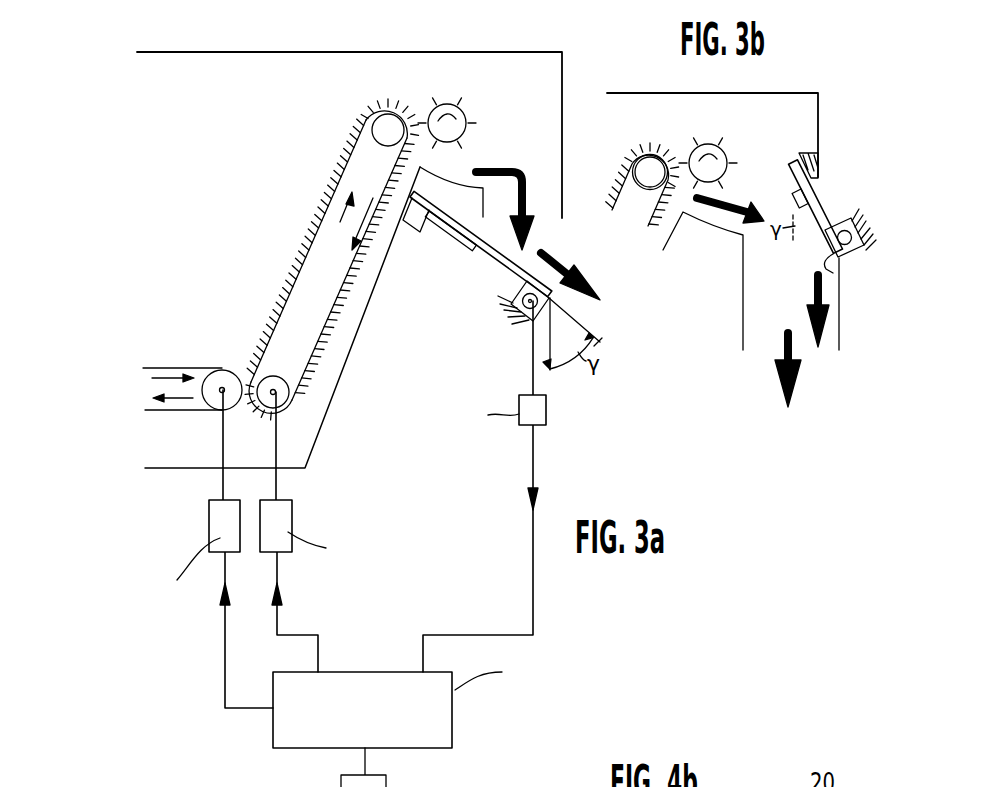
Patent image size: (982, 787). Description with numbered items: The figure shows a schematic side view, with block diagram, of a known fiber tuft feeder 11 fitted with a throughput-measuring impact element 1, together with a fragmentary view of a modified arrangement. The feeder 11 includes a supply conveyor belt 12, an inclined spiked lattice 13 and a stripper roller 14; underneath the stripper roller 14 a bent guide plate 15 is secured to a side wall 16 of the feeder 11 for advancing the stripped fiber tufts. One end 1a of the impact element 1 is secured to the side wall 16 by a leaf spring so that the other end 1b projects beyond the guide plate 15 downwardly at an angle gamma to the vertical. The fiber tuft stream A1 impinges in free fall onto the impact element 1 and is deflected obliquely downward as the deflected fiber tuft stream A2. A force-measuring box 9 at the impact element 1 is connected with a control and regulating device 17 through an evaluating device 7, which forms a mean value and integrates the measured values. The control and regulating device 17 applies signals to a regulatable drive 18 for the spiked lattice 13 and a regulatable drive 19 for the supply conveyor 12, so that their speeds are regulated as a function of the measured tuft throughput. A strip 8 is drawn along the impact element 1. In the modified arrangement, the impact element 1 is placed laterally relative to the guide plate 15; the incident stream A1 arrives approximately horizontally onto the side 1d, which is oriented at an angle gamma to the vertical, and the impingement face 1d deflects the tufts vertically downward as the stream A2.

In FIG. 3A, the impact element 1 is at (501, 260).
In FIG. 3B, the impact element 1 is at (817, 215).
In FIG. 3A, the one end of the impact element 1a is at (428, 197).
In FIG. 3A, the other end of the impact element 1b is at (576, 322).
In FIG. 3B, the side of the impact element 1d is at (842, 296).
In FIG. 3A, the evaluating device 7 is at (546, 412).
In FIG. 3A, the sensor strip on flap 8 is at (472, 244).
In FIG. 3A, the force-measuring box 9 is at (515, 320).
In FIG. 3B, the force-measuring box 9 is at (848, 259).
In FIG. 3A, the fiber tuft feeder 11 is at (440, 57).
In FIG. 3A, the supply conveyor belt 12 is at (177, 366).
In FIG. 3A, the spiked lattice 13 is at (293, 299).
In FIG. 3B, the spiked lattice 13 is at (616, 186).
In FIG. 3A, the stripper roller 14 is at (461, 112).
In FIG. 3B, the stripper roller 14 is at (727, 152).
In FIG. 3A, the bent guide plate 15 is at (453, 181).
In FIG. 3B, the bent guide plate 15 is at (714, 233).
In FIG. 3A, the side wall 16 is at (364, 317).
In FIG. 3A, the control and regulating device 17 is at (442, 718).
In FIG. 3A, the regulatable drive 18 is at (288, 525).
In FIG. 3A, the regulatable drive 19 is at (210, 521).
In FIG. 3A, the fiber tuft stream A1 is at (518, 172).
In FIG. 3B, the fiber tuft stream A1 is at (737, 208).
In FIG. 3A, the deflected fiber tuft stream A2 is at (572, 266).
In FIG. 3B, the deflected fiber tuft stream A2 is at (812, 298).